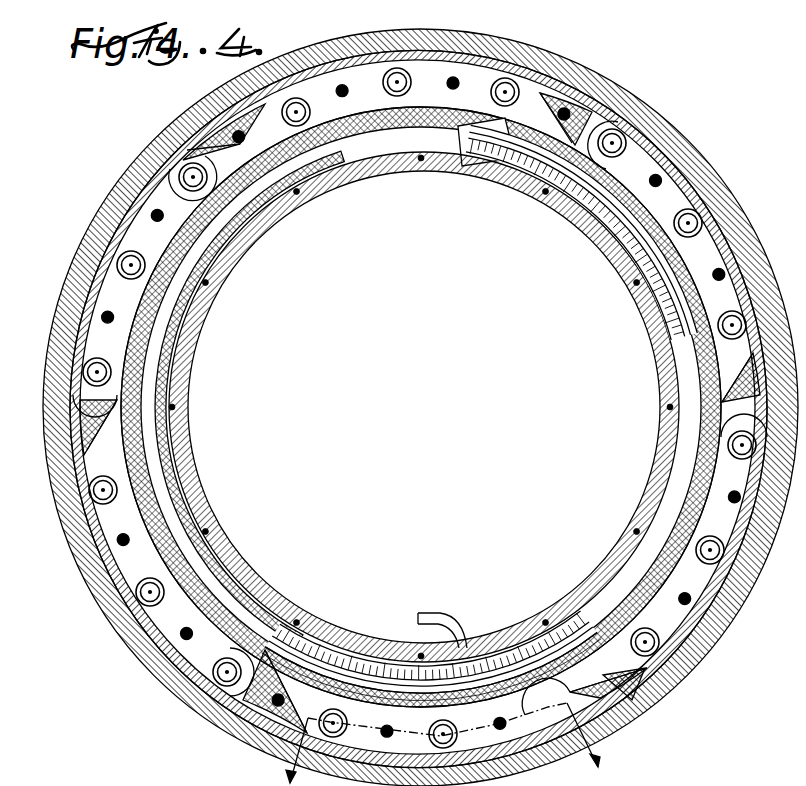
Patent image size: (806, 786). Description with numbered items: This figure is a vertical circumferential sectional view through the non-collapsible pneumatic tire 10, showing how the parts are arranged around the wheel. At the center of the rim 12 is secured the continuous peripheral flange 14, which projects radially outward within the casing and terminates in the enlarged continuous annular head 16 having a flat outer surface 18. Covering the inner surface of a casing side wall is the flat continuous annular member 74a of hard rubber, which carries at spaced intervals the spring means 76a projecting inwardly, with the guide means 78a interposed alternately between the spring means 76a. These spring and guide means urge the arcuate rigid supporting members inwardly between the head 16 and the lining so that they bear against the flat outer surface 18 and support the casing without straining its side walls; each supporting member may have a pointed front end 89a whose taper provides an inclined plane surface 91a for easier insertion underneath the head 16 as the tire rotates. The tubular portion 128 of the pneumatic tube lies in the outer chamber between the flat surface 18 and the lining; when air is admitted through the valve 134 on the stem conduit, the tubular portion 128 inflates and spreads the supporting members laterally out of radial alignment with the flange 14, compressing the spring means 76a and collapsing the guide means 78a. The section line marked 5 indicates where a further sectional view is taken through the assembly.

The non-collapsible pneumatic tire 10 is at (737, 195).
The rim 12 is at (605, 560).
The continuous peripheral flange 14 is at (652, 262).
The annular head 16 is at (482, 688).
The flat outer surface 18 is at (500, 688).
The tubular portion 128 is at (93, 412).
The flat continuous annular member 74a is at (177, 502).
The spring means 76a is at (390, 94).
The guide means 78a is at (449, 86).
The valve 134 is at (440, 612).
The pointed front end 89a is at (587, 667).
The inclined plane surface 91a is at (640, 703).
The section line 5- 5 is at (447, 743).